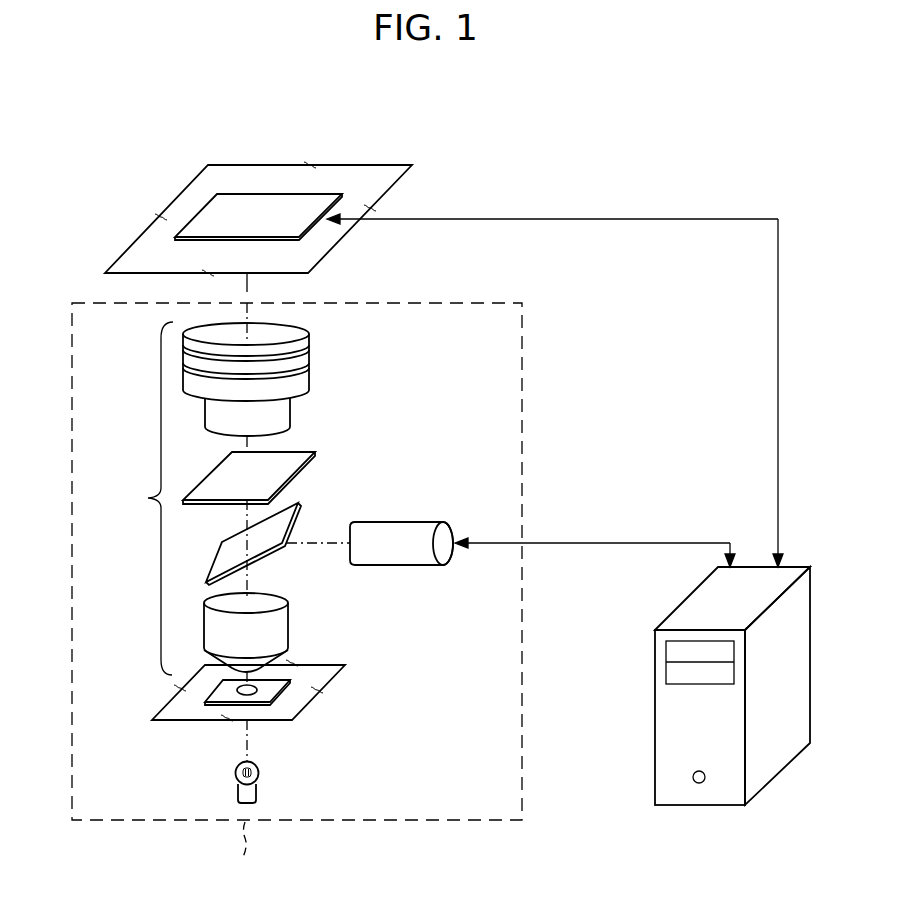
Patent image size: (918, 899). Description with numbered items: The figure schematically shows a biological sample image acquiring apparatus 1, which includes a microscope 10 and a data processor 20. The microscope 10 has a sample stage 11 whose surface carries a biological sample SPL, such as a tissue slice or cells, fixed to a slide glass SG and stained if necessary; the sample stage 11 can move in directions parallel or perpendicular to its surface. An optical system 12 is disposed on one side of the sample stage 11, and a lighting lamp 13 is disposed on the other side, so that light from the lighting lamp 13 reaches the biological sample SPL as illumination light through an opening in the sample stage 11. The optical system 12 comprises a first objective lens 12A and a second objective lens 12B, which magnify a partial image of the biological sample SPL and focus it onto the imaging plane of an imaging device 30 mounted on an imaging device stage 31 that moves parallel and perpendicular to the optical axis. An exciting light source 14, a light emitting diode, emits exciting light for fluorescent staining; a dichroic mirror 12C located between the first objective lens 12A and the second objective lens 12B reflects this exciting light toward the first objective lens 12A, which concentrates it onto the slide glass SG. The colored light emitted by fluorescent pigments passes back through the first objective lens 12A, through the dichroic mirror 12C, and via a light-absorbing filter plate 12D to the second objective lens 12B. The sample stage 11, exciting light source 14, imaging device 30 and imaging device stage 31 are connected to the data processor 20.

The biological sample image acquiring apparatus 1 is at (521, 81).
The microscope 10 is at (297, 595).
The sample stage 11 is at (287, 712).
The optical system 12 is at (248, 498).
The first objective lens 12A is at (290, 620).
The second objective lens 12B is at (310, 362).
The dichroic mirror 12C is at (300, 505).
The light-absorbing filter plate 12D is at (317, 453).
The lighting lamp 13 is at (258, 787).
The exciting light source 14 is at (380, 520).
The data processor 20 is at (672, 807).
The imaging device 30 is at (335, 192).
The imaging device stage 31 is at (226, 172).
The slide glass SG is at (203, 702).
The biological sample SPL is at (255, 688).